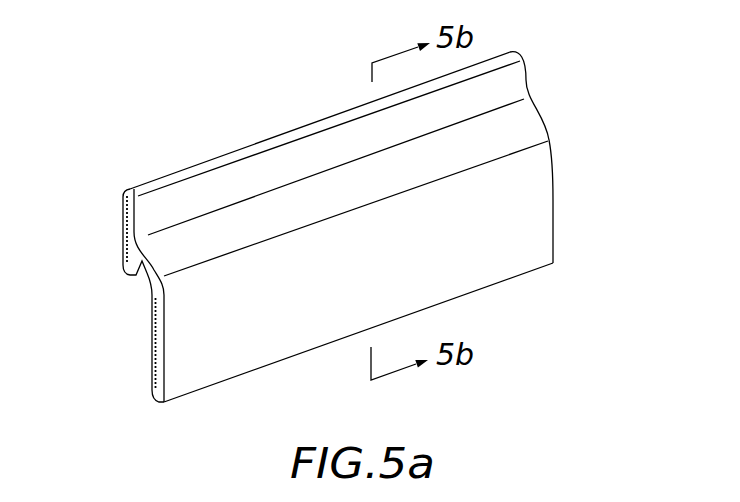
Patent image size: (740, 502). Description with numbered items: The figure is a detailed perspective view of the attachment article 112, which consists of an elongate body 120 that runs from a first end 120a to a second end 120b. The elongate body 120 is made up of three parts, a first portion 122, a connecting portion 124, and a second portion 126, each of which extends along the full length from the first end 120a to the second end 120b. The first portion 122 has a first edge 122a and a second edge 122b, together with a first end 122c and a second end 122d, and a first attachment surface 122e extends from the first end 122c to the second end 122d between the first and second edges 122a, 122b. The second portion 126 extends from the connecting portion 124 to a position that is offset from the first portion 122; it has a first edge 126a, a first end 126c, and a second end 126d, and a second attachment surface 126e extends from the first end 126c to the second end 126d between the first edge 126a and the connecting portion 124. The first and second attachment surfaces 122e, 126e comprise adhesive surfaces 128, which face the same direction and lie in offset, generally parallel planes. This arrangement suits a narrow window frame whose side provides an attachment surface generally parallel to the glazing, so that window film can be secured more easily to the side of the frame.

The attachment article 112 is at (86, 103).
The elongate body 120 is at (556, 130).
The first end 120a is at (162, 338).
The second end 120b is at (552, 193).
The first portion 122 is at (208, 188).
The first edge 122a is at (145, 182).
The second edge 122b is at (136, 271).
The first end 122c is at (125, 235).
The second end 122d is at (526, 77).
The first attachment surface 122e is at (125, 253).
The connecting portion 124 is at (283, 212).
The second portion 126 is at (187, 366).
The first edge 126a is at (260, 368).
The first end 126c is at (150, 376).
The second end 126d is at (553, 247).
The second attachment surface 126e is at (150, 362).
The adhesive surfaces 128 is at (123, 207).